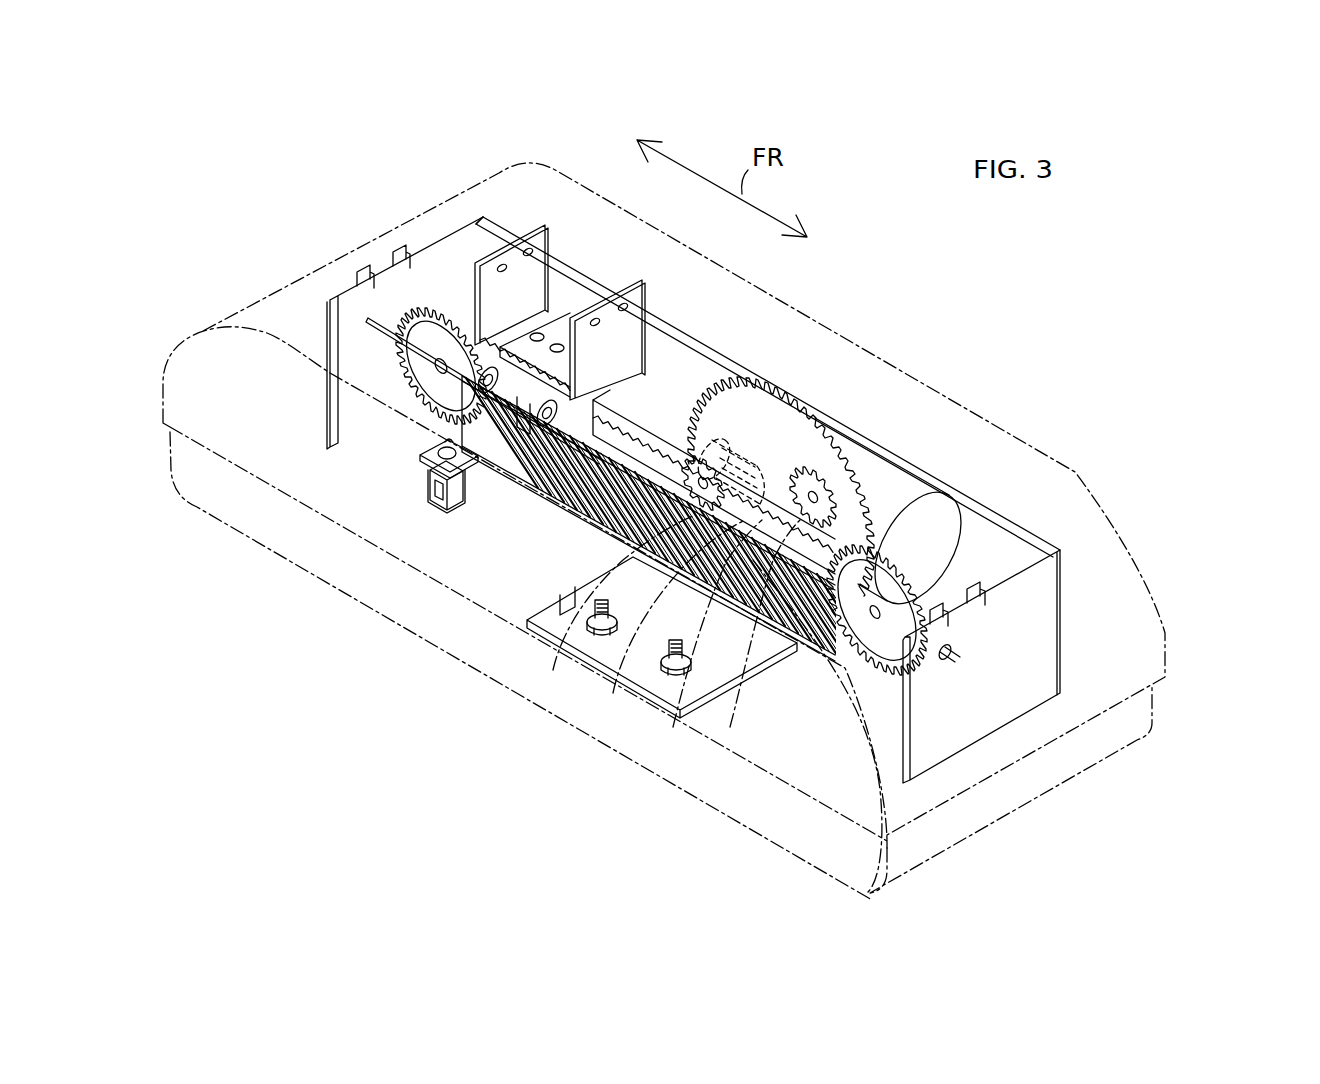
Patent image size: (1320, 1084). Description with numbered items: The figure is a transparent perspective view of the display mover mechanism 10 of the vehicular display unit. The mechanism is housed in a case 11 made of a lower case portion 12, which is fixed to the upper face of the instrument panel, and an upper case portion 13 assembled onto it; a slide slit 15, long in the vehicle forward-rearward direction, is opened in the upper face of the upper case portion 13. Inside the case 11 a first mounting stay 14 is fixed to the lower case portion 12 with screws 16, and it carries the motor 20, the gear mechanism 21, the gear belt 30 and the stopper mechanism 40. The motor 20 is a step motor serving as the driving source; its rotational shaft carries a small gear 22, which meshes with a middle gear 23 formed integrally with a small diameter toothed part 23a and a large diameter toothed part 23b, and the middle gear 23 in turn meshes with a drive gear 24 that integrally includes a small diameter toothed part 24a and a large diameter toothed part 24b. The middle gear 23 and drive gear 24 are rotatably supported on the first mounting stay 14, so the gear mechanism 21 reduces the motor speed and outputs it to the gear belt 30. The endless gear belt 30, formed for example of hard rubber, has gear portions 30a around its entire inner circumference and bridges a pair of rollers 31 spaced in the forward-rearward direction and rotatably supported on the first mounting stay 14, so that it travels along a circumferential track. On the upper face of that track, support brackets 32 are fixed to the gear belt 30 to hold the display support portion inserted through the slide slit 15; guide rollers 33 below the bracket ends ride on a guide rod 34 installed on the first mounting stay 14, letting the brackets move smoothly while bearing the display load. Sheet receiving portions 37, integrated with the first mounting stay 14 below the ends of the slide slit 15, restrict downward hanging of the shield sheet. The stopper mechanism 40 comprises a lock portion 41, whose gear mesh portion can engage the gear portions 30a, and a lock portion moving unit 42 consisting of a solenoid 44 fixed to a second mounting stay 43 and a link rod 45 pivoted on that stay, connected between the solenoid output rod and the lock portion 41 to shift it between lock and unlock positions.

The display mover mechanism 10 is at (213, 261).
The case 11 is at (717, 531).
The lower case portion 12 is at (1222, 656).
The upper case portion 13 is at (1134, 650).
The first mounting stay 14 is at (668, 322).
The slide slit 15 is at (430, 258).
The screws 16 is at (585, 632).
The motor 20 is at (912, 517).
The gear mechanism 21 is at (712, 642).
The small gear 22 is at (868, 478).
The middle gear 23 is at (755, 634).
The small diameter toothed part 23a is at (673, 727).
The large diameter toothed part 23b is at (730, 727).
The drive gear 24 is at (666, 637).
The small diameter toothed part 24a is at (553, 670).
The large diameter toothed part 24b is at (613, 693).
The gear belt 30 is at (650, 471).
The gear portions 30a is at (560, 595).
The rollers 31 is at (410, 408).
The support brackets 32 is at (556, 276).
The guide rollers 33 is at (472, 325).
The guide rod 34 is at (340, 322).
The sheet receiving portions 37 is at (402, 260).
The stopper mechanism 40 is at (411, 506).
The lock portion 41 is at (545, 447).
The lock portion moving unit 42 is at (417, 462).
The second mounting stay 43 is at (433, 473).
The solenoid 44 is at (447, 493).
The link rod 45 is at (495, 432).